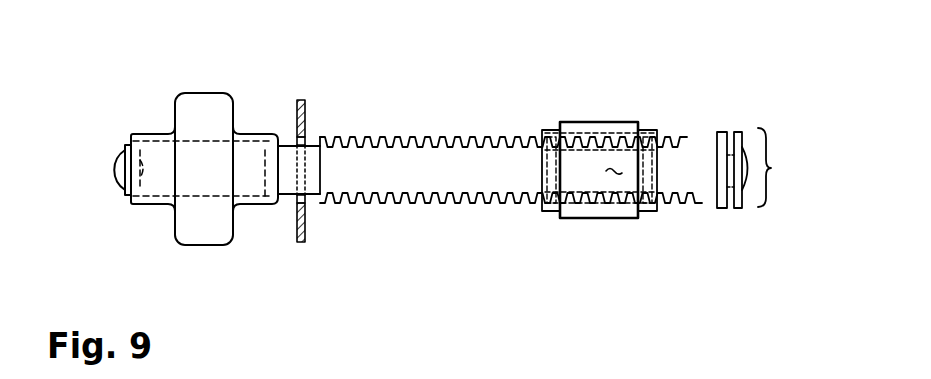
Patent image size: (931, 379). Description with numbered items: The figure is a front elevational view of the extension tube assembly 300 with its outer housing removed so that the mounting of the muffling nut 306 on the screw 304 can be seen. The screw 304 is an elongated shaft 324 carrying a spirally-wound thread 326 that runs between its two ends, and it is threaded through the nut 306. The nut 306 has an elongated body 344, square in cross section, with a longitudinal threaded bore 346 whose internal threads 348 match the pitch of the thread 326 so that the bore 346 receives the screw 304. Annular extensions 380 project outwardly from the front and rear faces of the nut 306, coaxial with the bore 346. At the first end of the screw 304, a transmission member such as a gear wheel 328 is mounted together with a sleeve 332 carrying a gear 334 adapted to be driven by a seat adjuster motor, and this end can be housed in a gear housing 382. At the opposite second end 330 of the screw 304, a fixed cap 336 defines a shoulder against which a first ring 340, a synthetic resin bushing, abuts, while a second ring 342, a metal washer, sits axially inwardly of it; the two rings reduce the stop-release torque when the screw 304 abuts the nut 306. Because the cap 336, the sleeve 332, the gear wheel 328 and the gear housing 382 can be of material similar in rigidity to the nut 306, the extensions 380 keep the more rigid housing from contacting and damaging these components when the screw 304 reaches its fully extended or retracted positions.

The extension tube assembly 300 is at (503, 93).
The screw 304 is at (490, 155).
The muffling nut 306 is at (629, 158).
The shaft 324 is at (365, 180).
The thread 326 is at (372, 138).
The gear wheel 328 is at (208, 93).
The second end 330 is at (757, 184).
The sleeve 332 is at (262, 205).
The gear 334 is at (173, 232).
The cap 336 is at (747, 190).
The first ring 340 is at (737, 210).
The second ring 342 is at (722, 132).
The body 344 is at (613, 131).
The threaded bore 346 is at (614, 166).
The internal threads 348 is at (622, 204).
The extensions 380 is at (542, 213).
The gear housing 382 is at (298, 100).